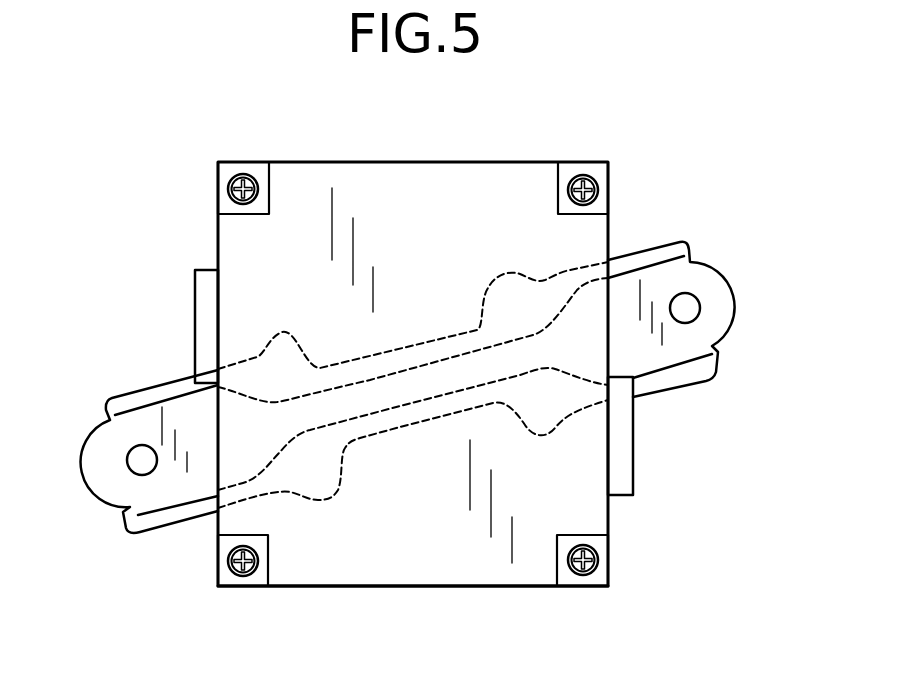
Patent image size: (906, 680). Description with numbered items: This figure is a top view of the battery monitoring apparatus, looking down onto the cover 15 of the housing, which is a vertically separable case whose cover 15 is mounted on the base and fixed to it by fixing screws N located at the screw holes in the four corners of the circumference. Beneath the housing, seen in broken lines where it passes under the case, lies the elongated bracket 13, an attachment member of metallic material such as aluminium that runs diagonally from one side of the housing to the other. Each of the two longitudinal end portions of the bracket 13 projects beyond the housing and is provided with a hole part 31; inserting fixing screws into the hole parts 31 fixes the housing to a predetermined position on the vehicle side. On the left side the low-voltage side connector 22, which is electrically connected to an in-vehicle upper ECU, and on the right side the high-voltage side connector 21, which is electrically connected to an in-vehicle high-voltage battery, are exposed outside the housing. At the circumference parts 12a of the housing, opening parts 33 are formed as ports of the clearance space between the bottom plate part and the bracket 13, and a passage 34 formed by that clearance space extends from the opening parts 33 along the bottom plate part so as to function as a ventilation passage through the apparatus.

The circumference part 12a is at (218, 224).
The bracket 13 is at (656, 247).
The cover 15 is at (320, 588).
The high-voltage side connector 21 is at (633, 455).
The low-voltage side connector 22 is at (195, 293).
The hole part 31 is at (696, 304).
The opening part 33 is at (608, 340).
The passage 34 is at (447, 373).
The fixing screw N is at (243, 173).